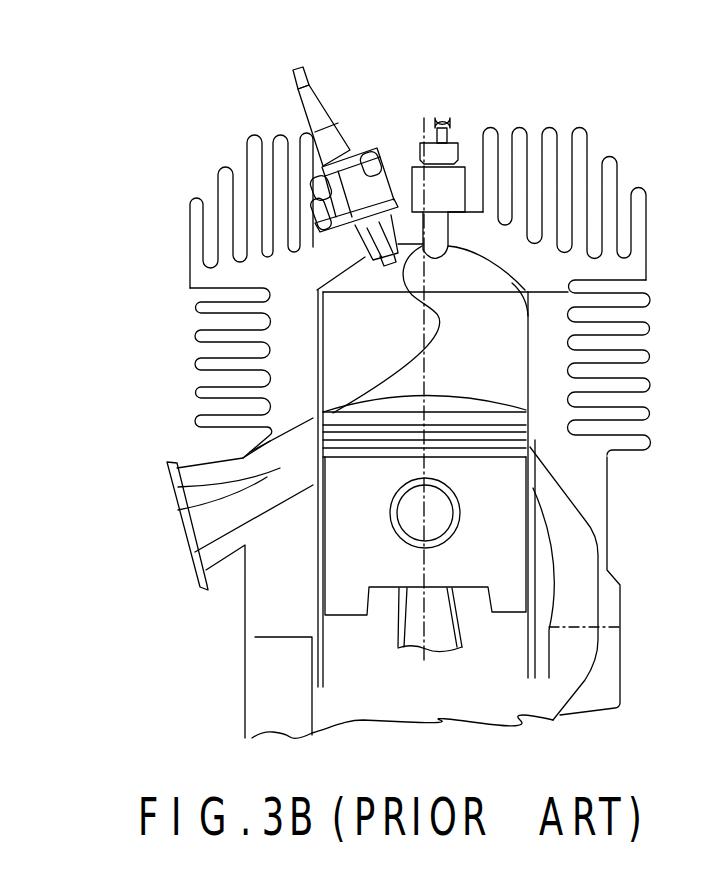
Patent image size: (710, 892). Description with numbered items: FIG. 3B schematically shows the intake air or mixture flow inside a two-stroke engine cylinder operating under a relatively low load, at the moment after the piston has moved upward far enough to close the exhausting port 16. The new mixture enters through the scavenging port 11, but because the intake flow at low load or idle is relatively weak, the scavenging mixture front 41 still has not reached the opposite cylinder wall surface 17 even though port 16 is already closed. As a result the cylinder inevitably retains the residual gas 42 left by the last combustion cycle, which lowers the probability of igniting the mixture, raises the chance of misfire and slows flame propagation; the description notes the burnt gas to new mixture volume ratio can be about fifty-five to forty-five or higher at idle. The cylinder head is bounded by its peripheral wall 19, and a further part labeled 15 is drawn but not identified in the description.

The scavenging port 11 is at (555, 503).
The cylinder head with cooling fins 15 is at (547, 273).
The exhausting port 16 is at (188, 506).
The cylinder wall surface 17 is at (280, 408).
The peripheral wall of the cylinder head 19 is at (313, 247).
The scavenging mixture front 41 is at (480, 280).
The residual gas 42 is at (322, 333).